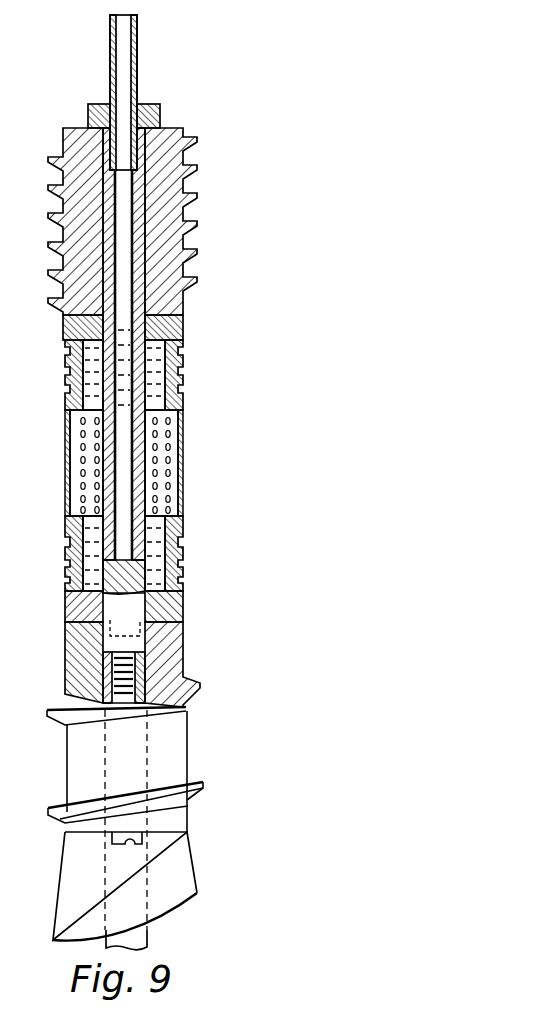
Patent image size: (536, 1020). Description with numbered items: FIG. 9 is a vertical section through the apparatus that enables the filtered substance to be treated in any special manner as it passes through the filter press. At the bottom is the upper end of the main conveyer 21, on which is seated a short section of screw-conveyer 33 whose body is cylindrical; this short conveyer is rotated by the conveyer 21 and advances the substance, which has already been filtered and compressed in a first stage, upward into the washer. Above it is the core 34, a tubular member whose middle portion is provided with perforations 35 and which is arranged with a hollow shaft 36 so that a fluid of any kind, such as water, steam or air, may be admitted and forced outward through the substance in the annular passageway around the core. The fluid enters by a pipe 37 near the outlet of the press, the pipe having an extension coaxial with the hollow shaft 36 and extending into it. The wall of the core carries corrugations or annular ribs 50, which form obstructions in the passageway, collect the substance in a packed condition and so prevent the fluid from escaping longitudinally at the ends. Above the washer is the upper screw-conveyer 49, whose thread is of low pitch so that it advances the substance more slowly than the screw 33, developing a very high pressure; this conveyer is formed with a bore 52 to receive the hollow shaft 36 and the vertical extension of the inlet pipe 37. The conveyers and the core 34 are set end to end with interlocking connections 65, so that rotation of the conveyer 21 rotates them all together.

The pipe 37 is at (137, 83).
The bore 52 is at (147, 182).
The upper screw-conveyer 49 is at (168, 240).
The corrugations or annular ribs 50 is at (183, 392).
The core 34 is at (183, 413).
The hollow shaft 36 is at (150, 443).
The perforations 35 is at (187, 482).
The short section of screw-conveyer 33 is at (167, 760).
The conveyer 21 is at (173, 865).
The interlocking connections 65 is at (130, 845).